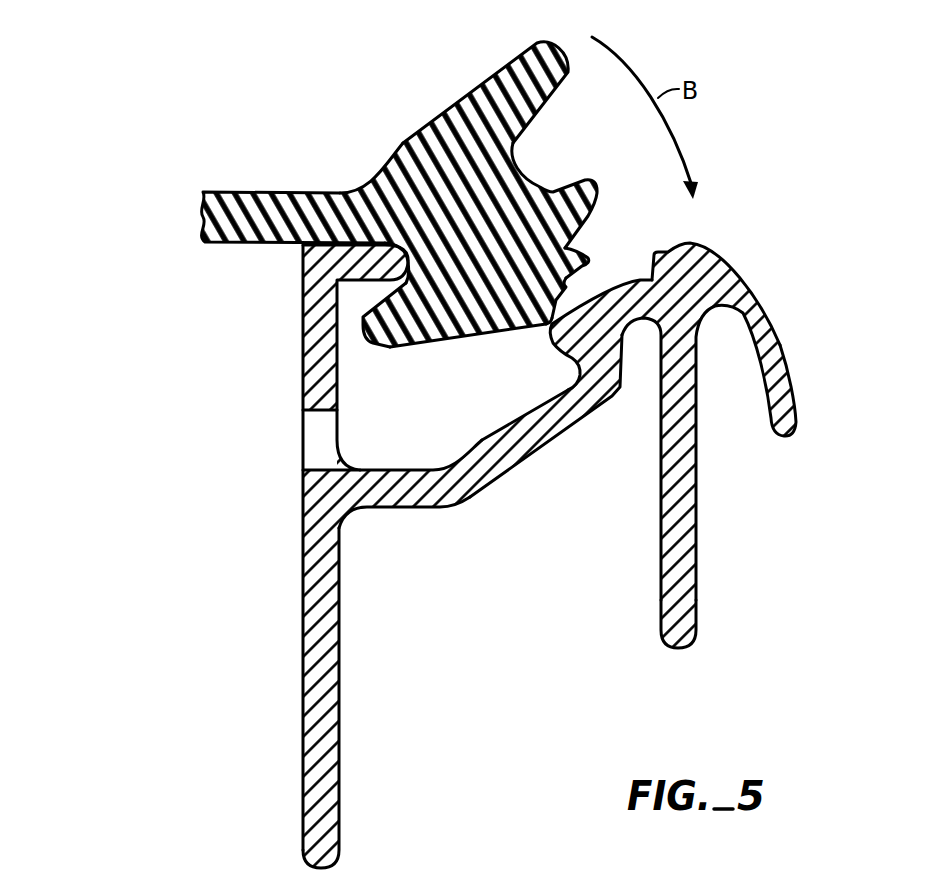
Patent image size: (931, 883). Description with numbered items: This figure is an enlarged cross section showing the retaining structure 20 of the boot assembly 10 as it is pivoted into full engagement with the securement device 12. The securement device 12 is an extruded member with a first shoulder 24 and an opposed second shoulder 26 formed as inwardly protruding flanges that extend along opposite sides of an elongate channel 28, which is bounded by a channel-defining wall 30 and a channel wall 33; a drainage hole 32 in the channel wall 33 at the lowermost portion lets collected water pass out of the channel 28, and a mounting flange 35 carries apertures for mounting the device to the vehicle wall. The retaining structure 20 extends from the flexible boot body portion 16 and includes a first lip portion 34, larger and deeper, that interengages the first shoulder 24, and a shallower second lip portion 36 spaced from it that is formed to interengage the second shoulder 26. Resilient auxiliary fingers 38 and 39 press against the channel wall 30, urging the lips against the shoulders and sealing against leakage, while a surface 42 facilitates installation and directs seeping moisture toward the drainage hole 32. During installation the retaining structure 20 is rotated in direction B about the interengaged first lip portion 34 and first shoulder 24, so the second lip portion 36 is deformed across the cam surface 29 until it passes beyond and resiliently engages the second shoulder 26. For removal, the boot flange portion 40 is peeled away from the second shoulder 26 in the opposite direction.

The boot assembly 10 is at (164, 283).
The securement device 12 is at (714, 521).
The boot body portion 16 is at (220, 190).
The retaining structure 20 is at (403, 126).
The first shoulder 24 is at (303, 312).
The second shoulder 26 is at (552, 357).
The channel 28 is at (405, 441).
The cam surface 29 is at (653, 278).
The channel-defining wall 30 is at (527, 402).
The drainage hole 32 is at (320, 468).
The channel wall 33 is at (304, 352).
The first lip portion 34 is at (365, 326).
The mounting flange 35 is at (696, 610).
The second lip portion 36 is at (574, 183).
The auxiliary finger 38 is at (565, 248).
The second auxiliary finger 39 is at (572, 292).
The boot flange portion 40 is at (483, 82).
The surface 42 is at (428, 340).